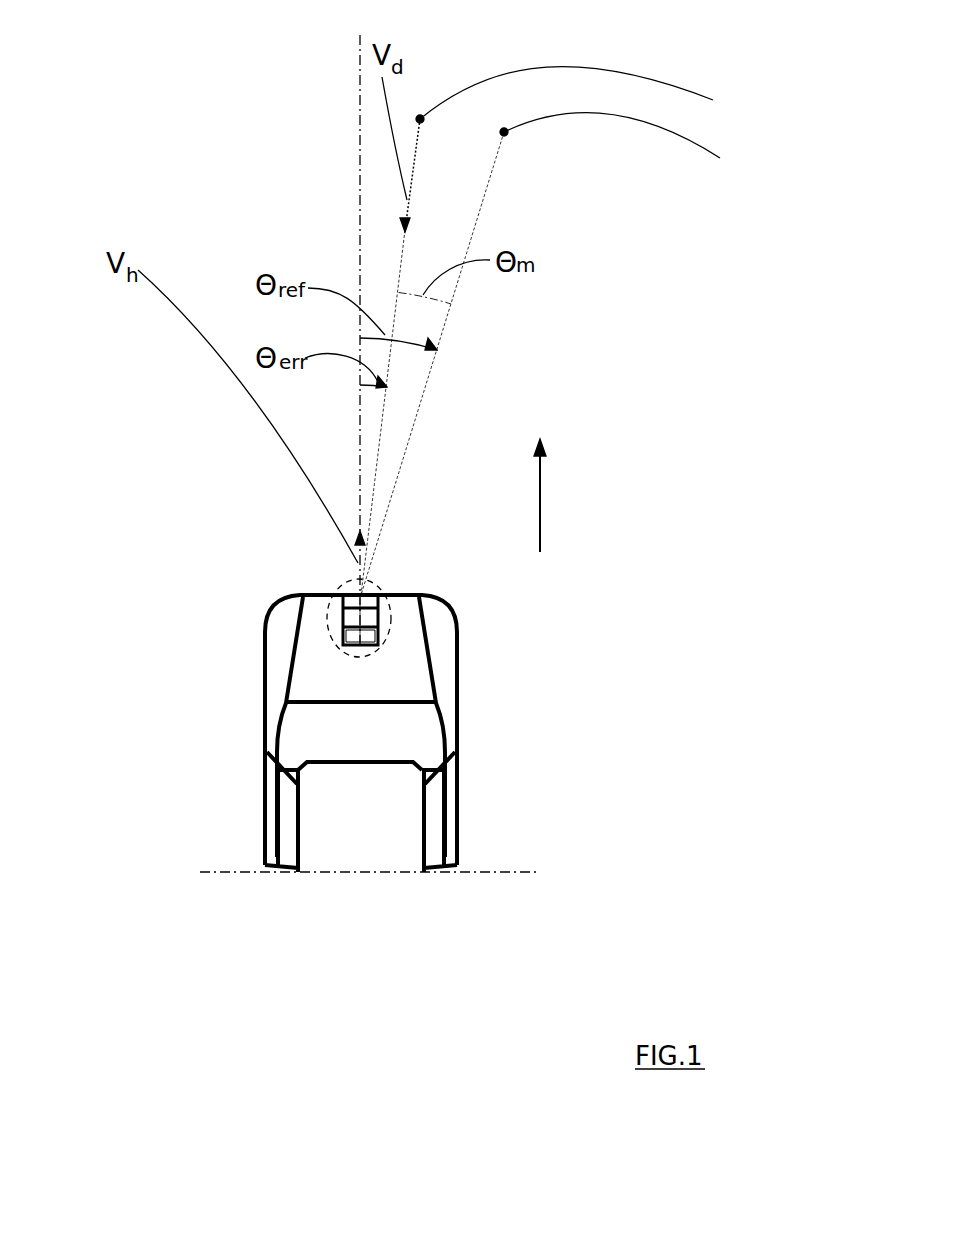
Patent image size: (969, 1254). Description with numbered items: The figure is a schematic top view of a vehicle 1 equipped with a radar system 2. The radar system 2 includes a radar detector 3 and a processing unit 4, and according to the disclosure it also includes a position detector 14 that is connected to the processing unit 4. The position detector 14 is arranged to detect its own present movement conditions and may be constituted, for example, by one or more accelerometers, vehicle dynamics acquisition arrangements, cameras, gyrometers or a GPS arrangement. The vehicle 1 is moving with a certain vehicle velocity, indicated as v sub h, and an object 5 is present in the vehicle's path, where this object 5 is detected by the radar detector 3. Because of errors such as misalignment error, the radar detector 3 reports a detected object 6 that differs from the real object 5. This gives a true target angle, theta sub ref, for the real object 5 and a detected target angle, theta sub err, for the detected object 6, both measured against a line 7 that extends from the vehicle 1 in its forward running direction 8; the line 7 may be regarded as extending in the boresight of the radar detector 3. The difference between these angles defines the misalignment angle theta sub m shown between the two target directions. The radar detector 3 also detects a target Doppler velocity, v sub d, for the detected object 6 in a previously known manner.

The vehicle 1 is at (348, 815).
The radar system 2 is at (328, 592).
The radar detector 3 is at (357, 618).
The processing unit 4 is at (343, 627).
The object 5 is at (550, 354).
The detected object 6 is at (550, 331).
The line 7 is at (360, 95).
The forward running direction 8 is at (540, 502).
The position detector 14 is at (368, 637).